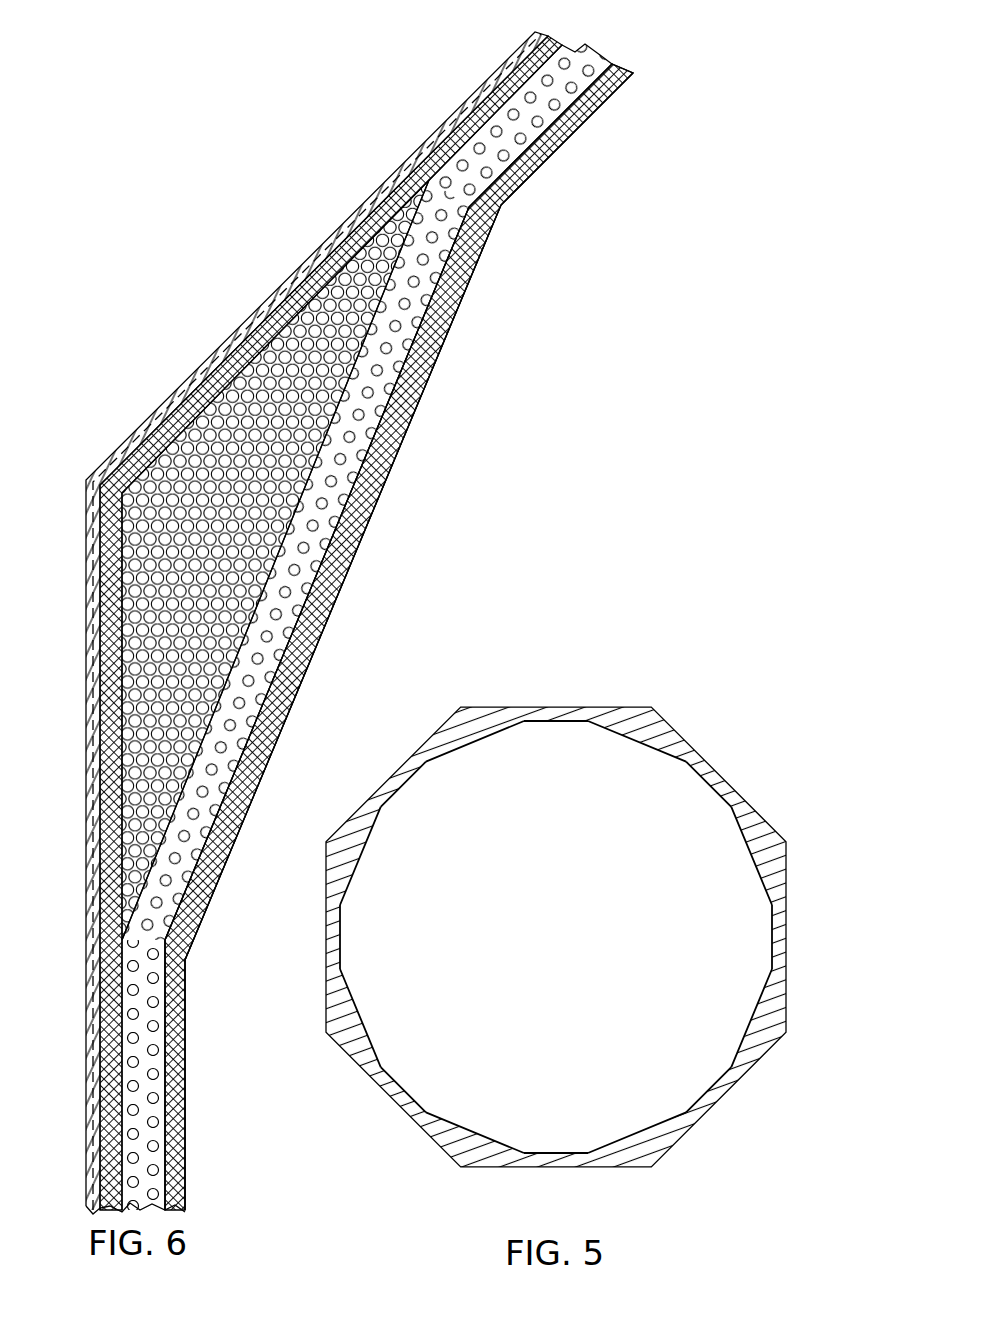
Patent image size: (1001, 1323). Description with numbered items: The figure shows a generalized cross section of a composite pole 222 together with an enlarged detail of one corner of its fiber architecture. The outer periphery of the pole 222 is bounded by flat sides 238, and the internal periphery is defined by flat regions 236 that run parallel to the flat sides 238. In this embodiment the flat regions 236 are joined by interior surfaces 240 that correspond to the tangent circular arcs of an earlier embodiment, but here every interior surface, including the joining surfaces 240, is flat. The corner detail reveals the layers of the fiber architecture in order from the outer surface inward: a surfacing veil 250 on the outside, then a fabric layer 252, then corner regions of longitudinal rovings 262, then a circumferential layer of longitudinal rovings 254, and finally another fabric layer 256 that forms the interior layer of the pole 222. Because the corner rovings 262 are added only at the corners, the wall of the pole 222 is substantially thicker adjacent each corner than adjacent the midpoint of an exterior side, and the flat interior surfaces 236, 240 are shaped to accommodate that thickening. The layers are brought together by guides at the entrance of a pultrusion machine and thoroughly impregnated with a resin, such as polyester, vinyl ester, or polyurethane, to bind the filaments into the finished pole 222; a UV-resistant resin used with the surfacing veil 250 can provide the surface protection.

In FIG. 6, the composite pole 222 is at (316, 189).
In FIG. 5, the composite pole 222 is at (718, 735).
In FIG. 6, the flat regions 236 is at (575, 145).
In FIG. 5, the flat regions 236 is at (577, 723).
In FIG. 6, the flat sides 238 is at (458, 104).
In FIG. 5, the flat sides 238 is at (575, 708).
In FIG. 6, the joining interior surfaces 240 is at (380, 497).
In FIG. 5, the joining interior surfaces 240 is at (640, 743).
In FIG. 6, the surfacing veil 250 is at (90, 682).
In FIG. 6, the fabric layer 252 is at (110, 792).
In FIG. 6, the circumferential layer of longitudinal rovings 254 is at (410, 302).
In FIG. 6, the interior fabric layer 256 is at (422, 368).
In FIG. 6, the corner regions of longitudinal rovings 262 is at (130, 500).